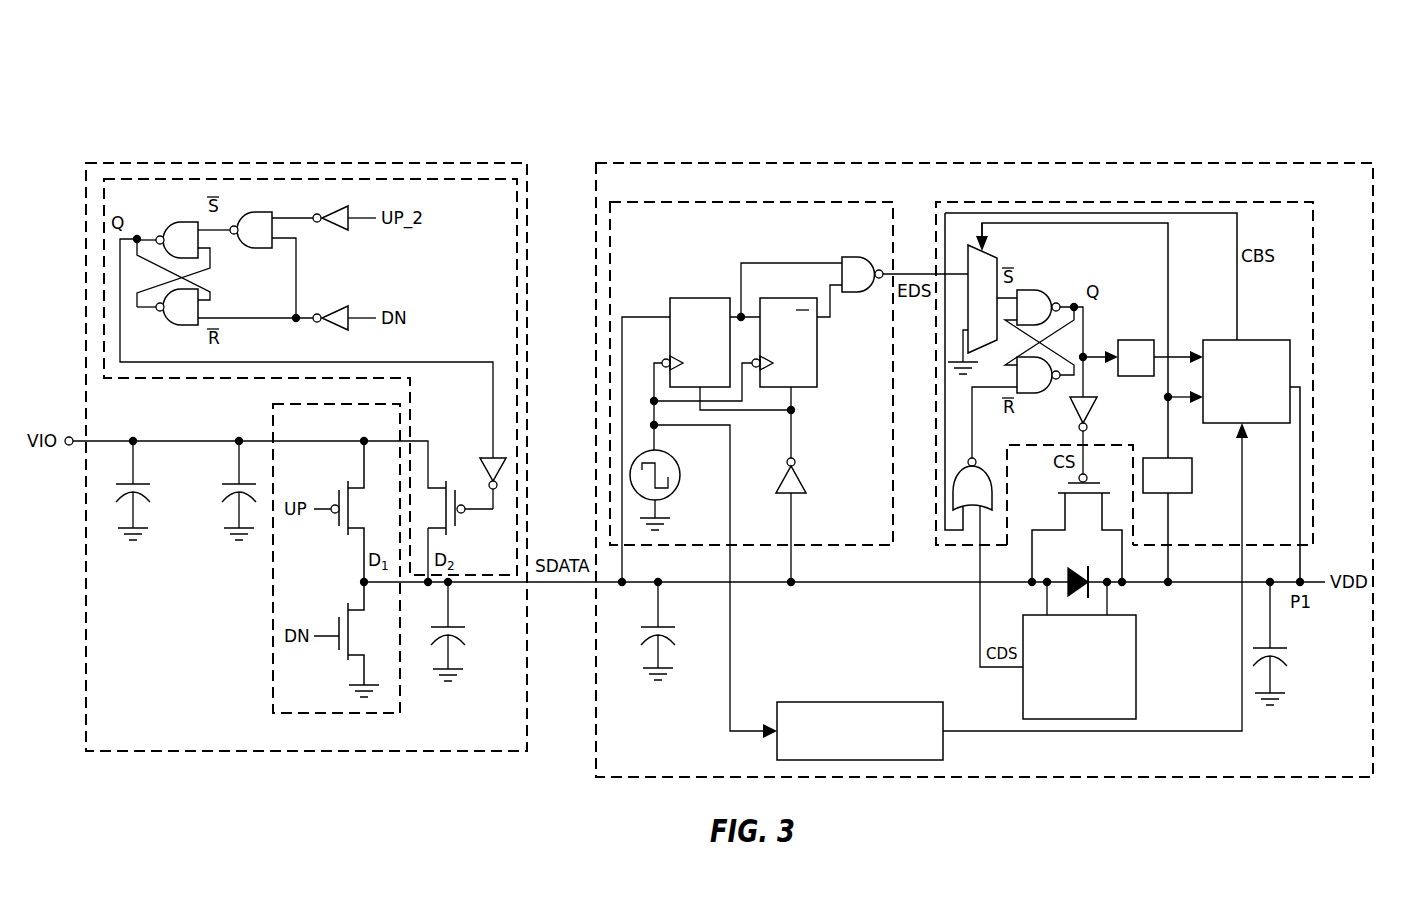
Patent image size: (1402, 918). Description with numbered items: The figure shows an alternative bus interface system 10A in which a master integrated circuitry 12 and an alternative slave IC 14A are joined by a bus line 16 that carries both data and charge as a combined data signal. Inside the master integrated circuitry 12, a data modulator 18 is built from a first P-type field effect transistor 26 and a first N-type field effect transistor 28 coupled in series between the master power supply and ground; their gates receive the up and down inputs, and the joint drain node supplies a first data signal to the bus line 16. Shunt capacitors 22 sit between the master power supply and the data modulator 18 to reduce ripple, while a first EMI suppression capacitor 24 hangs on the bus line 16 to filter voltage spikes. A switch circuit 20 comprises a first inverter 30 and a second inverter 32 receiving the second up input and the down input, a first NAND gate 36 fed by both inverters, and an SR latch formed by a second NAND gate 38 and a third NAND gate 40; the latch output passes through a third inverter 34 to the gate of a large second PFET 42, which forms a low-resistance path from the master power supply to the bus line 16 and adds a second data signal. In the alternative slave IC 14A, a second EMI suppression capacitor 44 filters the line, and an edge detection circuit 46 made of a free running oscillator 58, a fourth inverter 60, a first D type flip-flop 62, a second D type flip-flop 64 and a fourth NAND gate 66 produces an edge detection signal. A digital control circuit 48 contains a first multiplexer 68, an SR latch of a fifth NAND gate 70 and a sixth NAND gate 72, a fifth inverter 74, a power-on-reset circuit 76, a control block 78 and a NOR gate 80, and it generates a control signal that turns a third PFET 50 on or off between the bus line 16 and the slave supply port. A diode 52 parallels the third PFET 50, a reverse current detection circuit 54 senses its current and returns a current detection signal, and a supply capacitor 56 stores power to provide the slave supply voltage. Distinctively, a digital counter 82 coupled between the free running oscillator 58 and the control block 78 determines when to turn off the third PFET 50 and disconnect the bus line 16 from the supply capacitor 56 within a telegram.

The alternative bus interface system 10A is at (958, 88).
The master integrated circuitry 12 is at (306, 457).
The alternative slave IC 14A is at (984, 470).
The bus line 16 is at (553, 589).
The data modulator 18 is at (336, 558).
The switch circuit 20 is at (310, 377).
The shunt capacitors 22 is at (225, 493).
The first electromagnetic interference suppression capacitor 24 is at (459, 631).
The first P-type field effect transistor 26 is at (346, 511).
The first N-type field effect transistor 28 is at (346, 639).
The first inverter 30 is at (343, 230).
The second inverter 32 is at (343, 330).
The third inverter 34 is at (486, 472).
The first NAND gate 36 is at (235, 230).
The second NAND gate 38 is at (167, 240).
The third NAND gate 40 is at (167, 307).
The second PFET 42 is at (466, 498).
The second EMI suppression capacitor 44 is at (651, 631).
The edge detection circuit 46 is at (751, 373).
The digital control circuit 48 is at (1124, 373).
The third PFET 50 is at (1077, 528).
The diode 52 is at (1078, 570).
The reverse current detection circuit 54 is at (1079, 650).
The supply capacitor 56 is at (1277, 643).
The free running oscillator 58 is at (670, 490).
The fourth inverter 60 is at (803, 520).
The first D type flip-flop 62 is at (696, 342).
The second D type flip-flop 64 is at (784, 342).
The fourth NAND gate 66 is at (905, 274).
The first multiplexer 68 is at (975, 299).
The fifth NAND gate 70 is at (1040, 343).
The sixth NAND gate 72 is at (1023, 382).
The fifth inverter 74 is at (1096, 435).
The power-on-reset circuit 76 is at (1181, 475).
The control block 78 is at (1116, 535).
The NOR gate 80 is at (988, 562).
The digital counter 82 is at (990, 550).